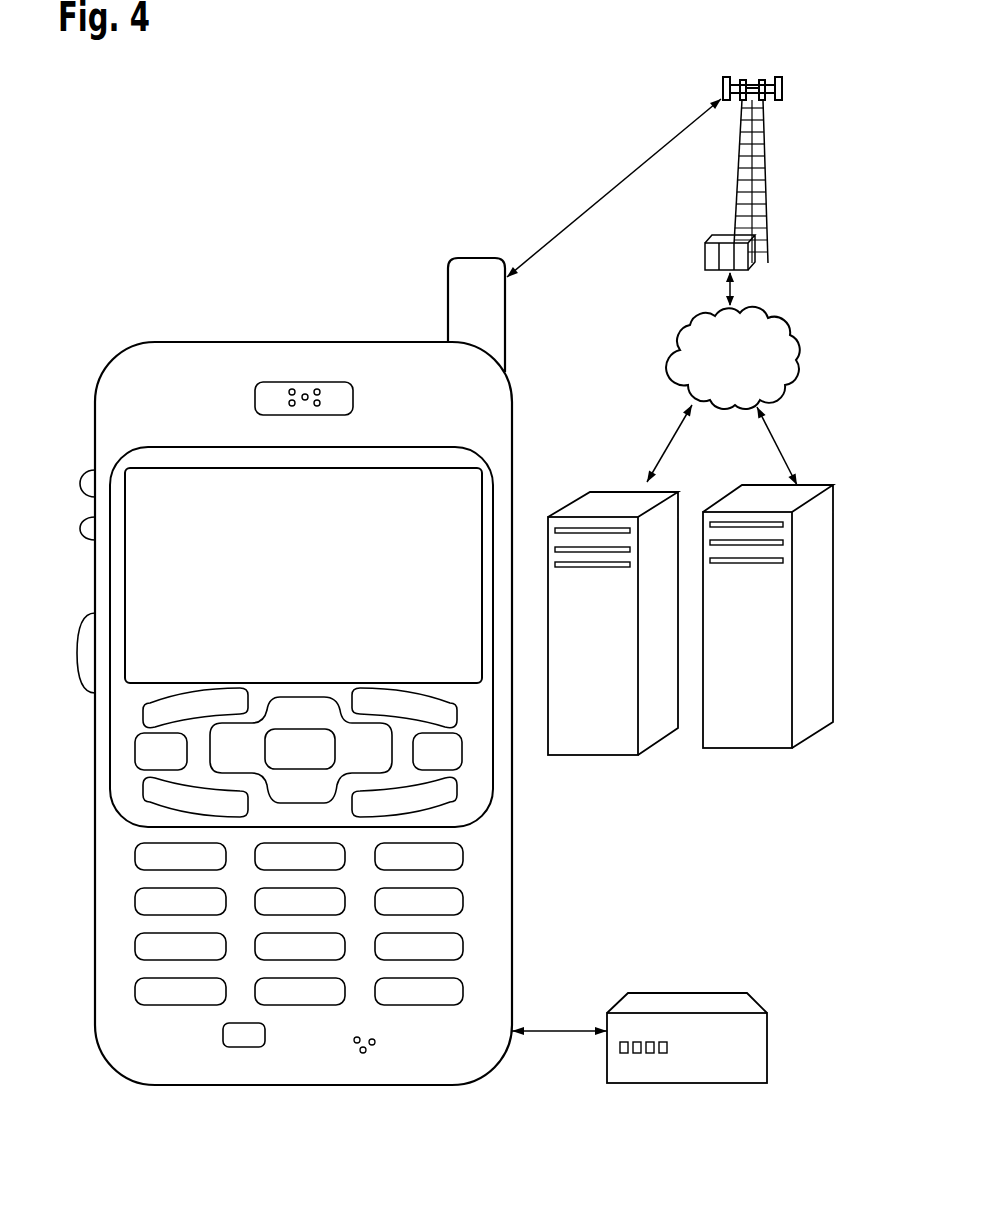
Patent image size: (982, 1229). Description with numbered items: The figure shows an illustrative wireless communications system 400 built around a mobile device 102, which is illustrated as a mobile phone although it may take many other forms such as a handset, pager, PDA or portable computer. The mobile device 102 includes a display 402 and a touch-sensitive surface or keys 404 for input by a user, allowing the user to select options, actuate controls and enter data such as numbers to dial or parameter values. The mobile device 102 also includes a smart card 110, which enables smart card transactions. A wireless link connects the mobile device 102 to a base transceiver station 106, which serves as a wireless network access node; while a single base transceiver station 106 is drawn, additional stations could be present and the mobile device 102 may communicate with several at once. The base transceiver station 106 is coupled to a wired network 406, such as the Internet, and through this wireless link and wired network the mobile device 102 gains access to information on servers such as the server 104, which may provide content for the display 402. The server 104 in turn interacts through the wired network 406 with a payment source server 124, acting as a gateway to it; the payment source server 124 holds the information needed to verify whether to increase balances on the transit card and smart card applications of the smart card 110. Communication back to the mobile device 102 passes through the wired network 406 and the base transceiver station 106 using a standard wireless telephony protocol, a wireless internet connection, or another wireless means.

The wireless communications system 400 is at (434, 84).
The mobile device 102 is at (145, 1076).
The display 402 is at (478, 498).
The keys 404 is at (92, 722).
The base transceiver station 106 is at (737, 184).
The wired network 406 is at (692, 390).
The server 104 is at (614, 752).
The payment source server 124 is at (787, 748).
The smart card 110 is at (662, 1084).